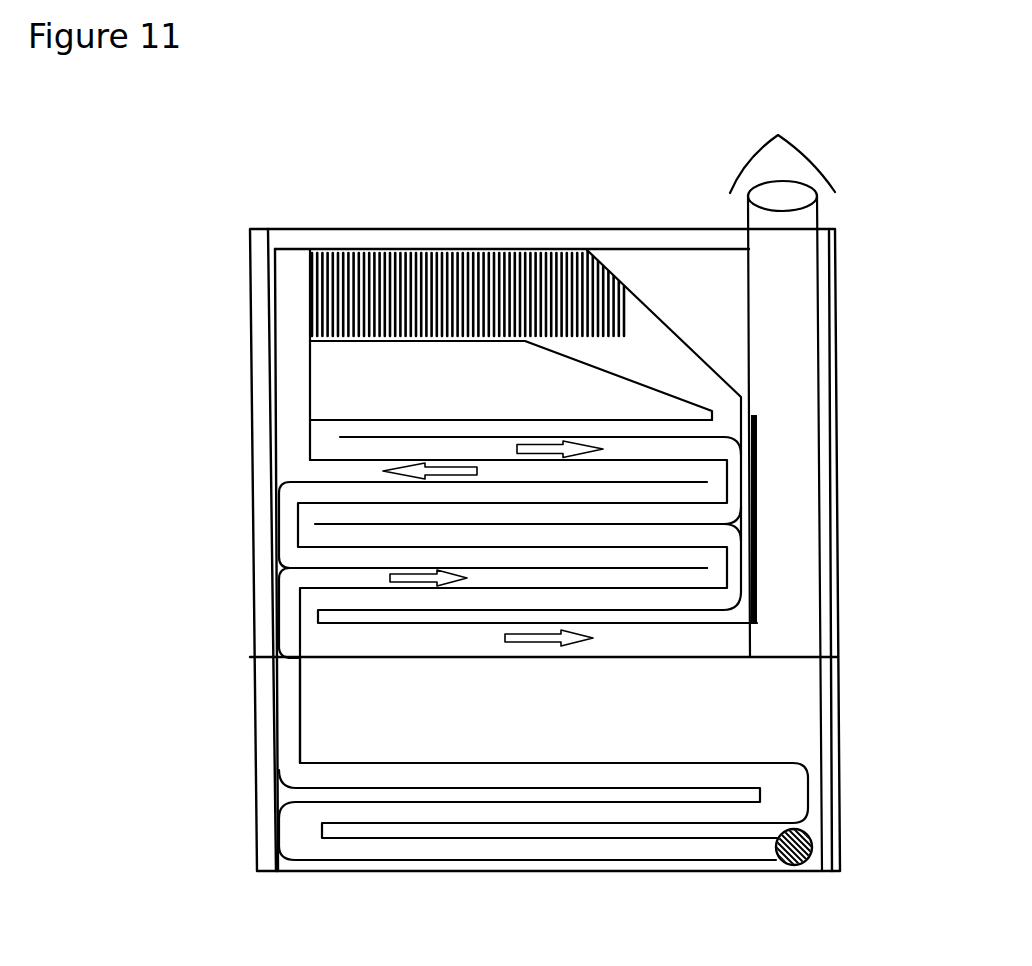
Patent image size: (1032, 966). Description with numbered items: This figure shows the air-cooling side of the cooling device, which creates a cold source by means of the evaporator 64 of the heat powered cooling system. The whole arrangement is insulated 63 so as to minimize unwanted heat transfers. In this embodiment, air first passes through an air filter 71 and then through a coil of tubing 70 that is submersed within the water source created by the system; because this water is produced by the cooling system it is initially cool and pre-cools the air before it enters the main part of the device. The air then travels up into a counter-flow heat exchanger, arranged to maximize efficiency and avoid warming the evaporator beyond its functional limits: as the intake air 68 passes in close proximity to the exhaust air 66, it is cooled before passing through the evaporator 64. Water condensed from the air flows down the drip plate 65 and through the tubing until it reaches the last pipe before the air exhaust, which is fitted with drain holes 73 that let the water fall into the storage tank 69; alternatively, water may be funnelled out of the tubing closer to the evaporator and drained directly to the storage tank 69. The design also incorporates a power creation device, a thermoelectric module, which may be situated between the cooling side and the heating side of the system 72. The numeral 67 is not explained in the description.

The insulation 63 is at (290, 238).
The evaporator 64 is at (370, 253).
The drip plate 65 is at (652, 385).
The exhaust air 66 is at (538, 449).
The second flue gas passage 67 is at (415, 475).
The intake air 68 is at (320, 575).
The storage tank 69 is at (368, 752).
The coil of tubing 70 is at (302, 775).
The air filter 71 is at (800, 866).
The system 72 is at (758, 567).
The drain holes 73 is at (325, 652).